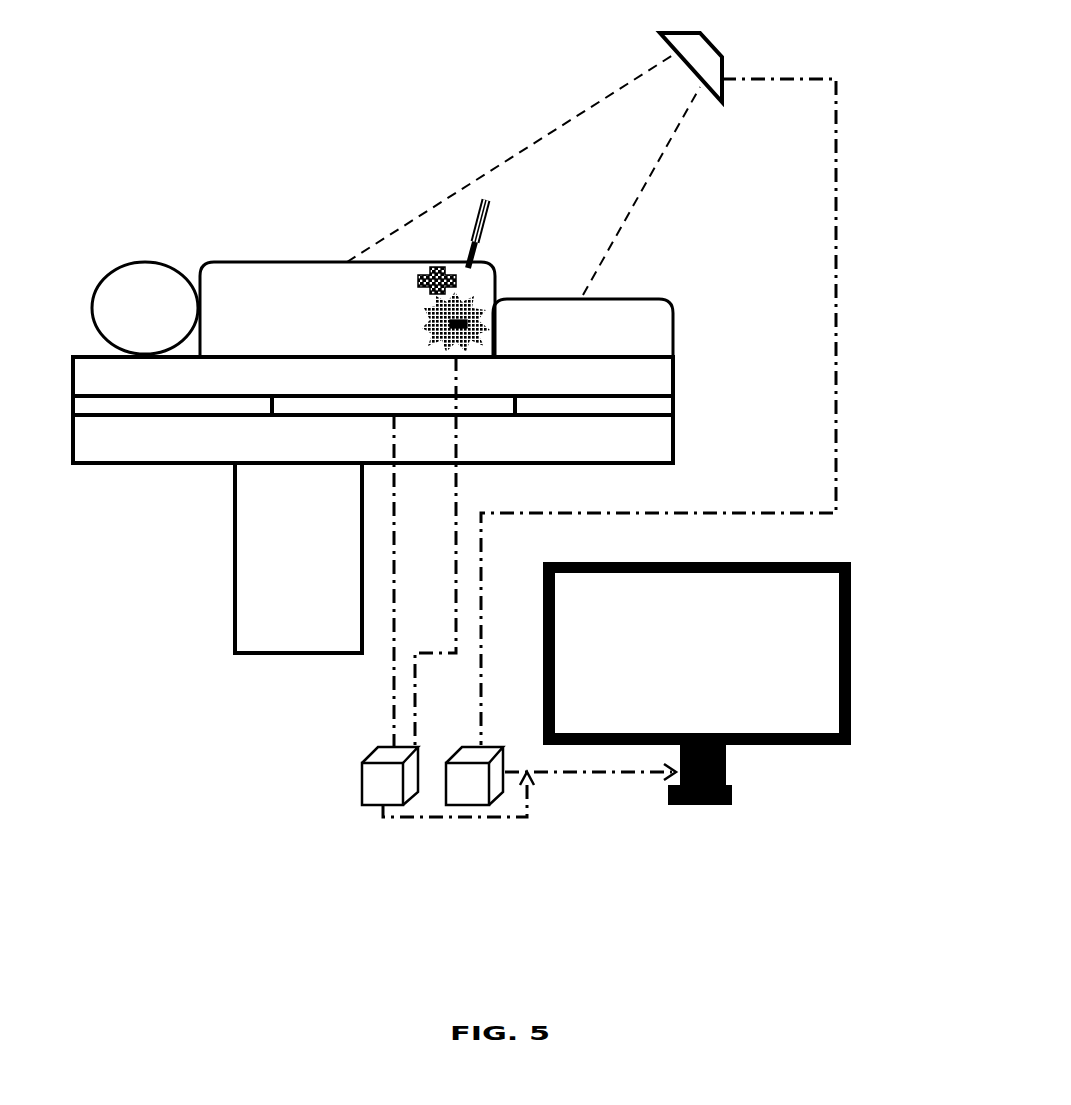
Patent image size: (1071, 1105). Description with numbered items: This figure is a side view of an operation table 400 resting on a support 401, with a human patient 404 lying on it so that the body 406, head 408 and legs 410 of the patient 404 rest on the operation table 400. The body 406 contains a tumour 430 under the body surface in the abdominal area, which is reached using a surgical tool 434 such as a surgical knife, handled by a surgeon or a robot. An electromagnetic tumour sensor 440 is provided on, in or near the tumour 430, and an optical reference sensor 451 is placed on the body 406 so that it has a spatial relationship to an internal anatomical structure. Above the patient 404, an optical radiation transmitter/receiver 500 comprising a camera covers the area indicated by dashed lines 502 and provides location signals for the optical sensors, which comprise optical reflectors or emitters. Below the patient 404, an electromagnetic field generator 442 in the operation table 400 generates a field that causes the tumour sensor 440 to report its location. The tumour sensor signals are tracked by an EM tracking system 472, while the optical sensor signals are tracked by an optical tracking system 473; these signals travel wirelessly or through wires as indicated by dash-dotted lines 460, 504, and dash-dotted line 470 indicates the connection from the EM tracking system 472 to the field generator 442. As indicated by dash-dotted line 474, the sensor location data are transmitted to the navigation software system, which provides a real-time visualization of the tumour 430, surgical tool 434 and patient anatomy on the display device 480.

The operation table 400 is at (160, 377).
The support 401 is at (247, 575).
The human patient 404 is at (423, 254).
The body 406 is at (313, 278).
The head 408 is at (128, 282).
The legs 410 is at (665, 329).
The tumour 430 is at (433, 320).
The surgical tool 434 is at (477, 225).
The electromagnetic tumour sensor 440 is at (465, 317).
The electromagnetic field generator 442 is at (485, 408).
The optical reference sensor 451 is at (430, 275).
The dash-dotted line 460 is at (456, 550).
The dash-dotted line 470 is at (390, 657).
The EM tracking system 472 is at (362, 775).
The optical tracking system 473 is at (517, 735).
The dash-dotted line 474 is at (573, 772).
The display device 480 is at (722, 562).
The optical radiation transmitter/receiver 500 is at (662, 38).
The dashed lines 502 is at (525, 150).
The dash-dotted line 504 is at (836, 250).